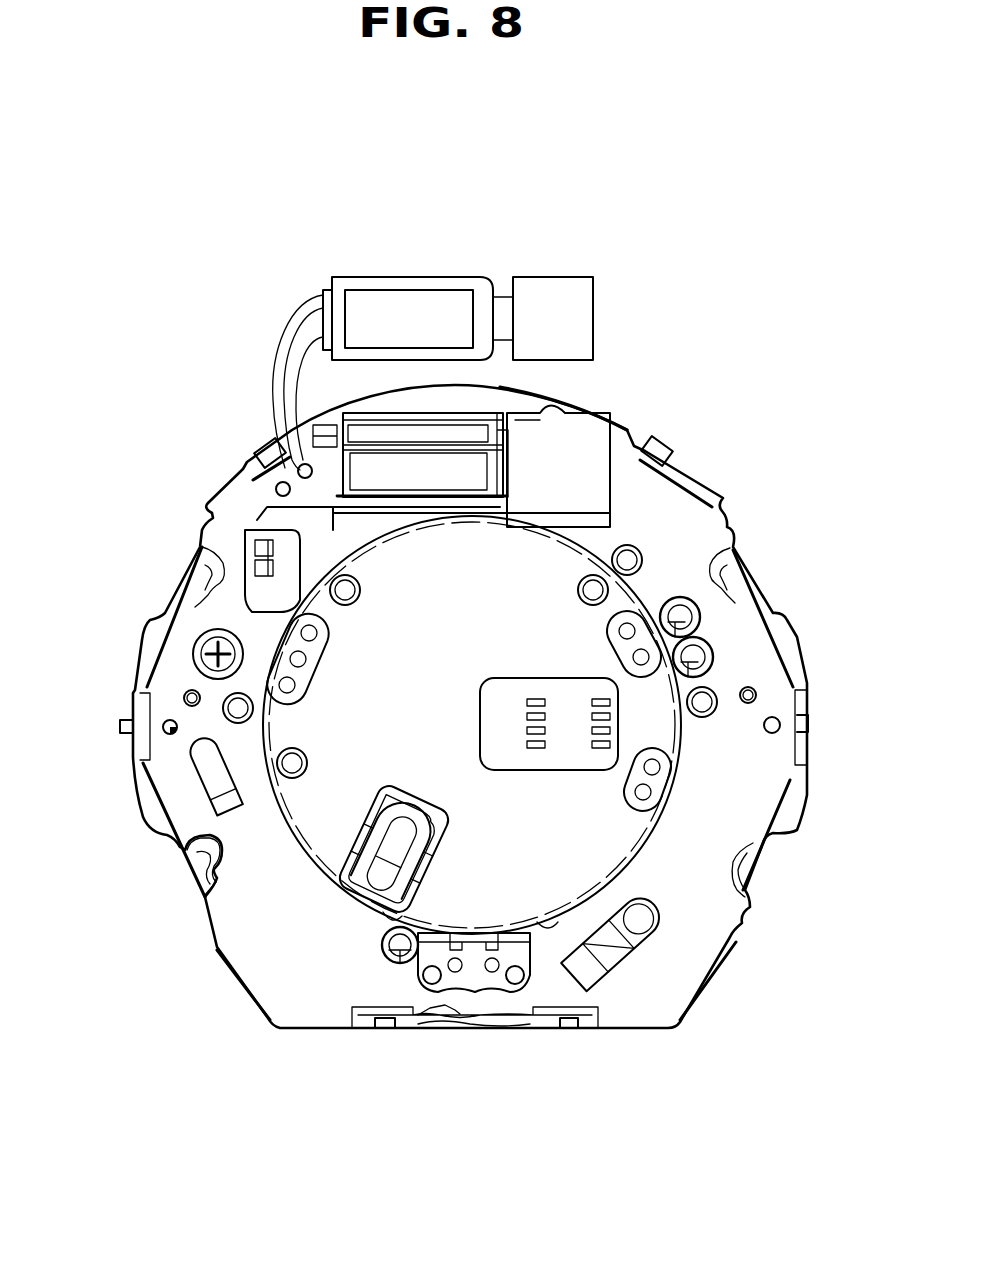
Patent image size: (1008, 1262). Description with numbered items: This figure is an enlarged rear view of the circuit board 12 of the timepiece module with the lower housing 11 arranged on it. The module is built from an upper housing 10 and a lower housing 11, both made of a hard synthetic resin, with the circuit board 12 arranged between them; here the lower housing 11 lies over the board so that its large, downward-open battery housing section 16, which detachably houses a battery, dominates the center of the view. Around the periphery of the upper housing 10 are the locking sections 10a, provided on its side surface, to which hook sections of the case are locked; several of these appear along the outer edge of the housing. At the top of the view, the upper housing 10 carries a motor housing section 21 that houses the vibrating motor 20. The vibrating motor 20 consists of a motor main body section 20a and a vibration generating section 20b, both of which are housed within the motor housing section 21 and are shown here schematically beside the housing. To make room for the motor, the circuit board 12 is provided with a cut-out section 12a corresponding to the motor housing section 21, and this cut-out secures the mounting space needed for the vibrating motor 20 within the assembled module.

The upper housing 10 is at (423, 400).
The locking section 10a is at (263, 450).
The lower housing 11 is at (697, 500).
The circuit board 12 is at (598, 426).
The cut-out section 12a is at (588, 434).
The battery housing section 16 is at (320, 832).
The vibrating motor 20 is at (458, 248).
The motor main body section 20a is at (433, 287).
The vibration generating section 20b is at (543, 275).
The motor housing section 21 is at (380, 467).